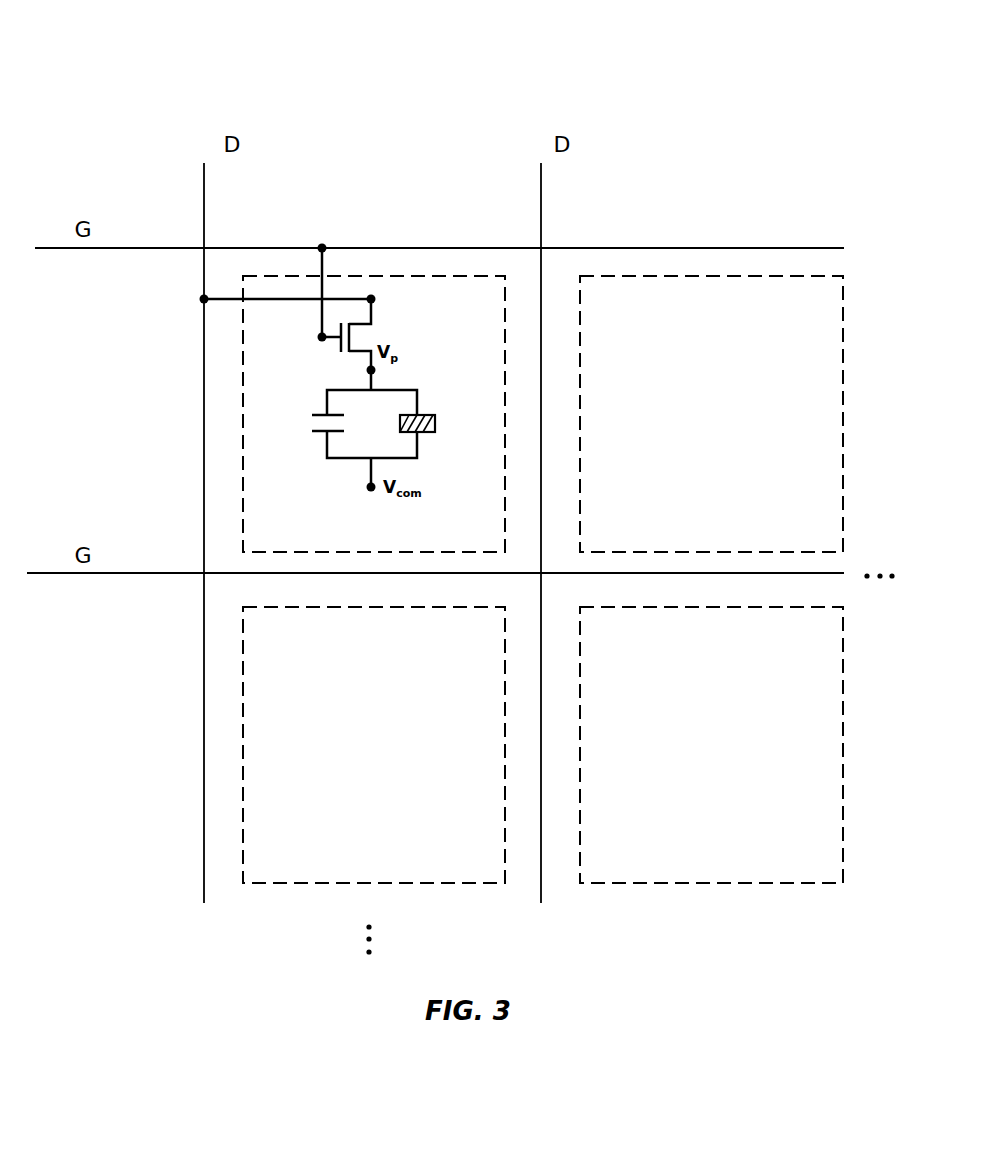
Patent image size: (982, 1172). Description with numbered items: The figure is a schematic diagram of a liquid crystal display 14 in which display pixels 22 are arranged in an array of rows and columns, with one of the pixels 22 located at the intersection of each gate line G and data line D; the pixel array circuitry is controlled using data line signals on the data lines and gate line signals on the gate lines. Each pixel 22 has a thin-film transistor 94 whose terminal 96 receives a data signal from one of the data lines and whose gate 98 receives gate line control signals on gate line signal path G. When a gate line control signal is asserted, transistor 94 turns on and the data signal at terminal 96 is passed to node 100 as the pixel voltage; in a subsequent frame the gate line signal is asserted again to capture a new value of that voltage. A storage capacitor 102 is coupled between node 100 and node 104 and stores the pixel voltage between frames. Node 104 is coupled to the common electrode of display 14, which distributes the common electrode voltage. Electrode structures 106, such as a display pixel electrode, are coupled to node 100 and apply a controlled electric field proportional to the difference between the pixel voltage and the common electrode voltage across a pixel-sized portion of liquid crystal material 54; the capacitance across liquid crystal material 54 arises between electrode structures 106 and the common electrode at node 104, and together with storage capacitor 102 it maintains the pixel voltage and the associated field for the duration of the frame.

The display 14 is at (672, 65).
The pixel 22 is at (436, 276).
The liquid crystal material 54 is at (440, 418).
The thin-film transistor 94 is at (325, 292).
The terminal 96 is at (376, 299).
The gate 98 is at (318, 337).
The node 100 is at (366, 370).
The storage capacitor 102 is at (318, 437).
The node 104 is at (366, 489).
The electrode structures 106 is at (433, 406).